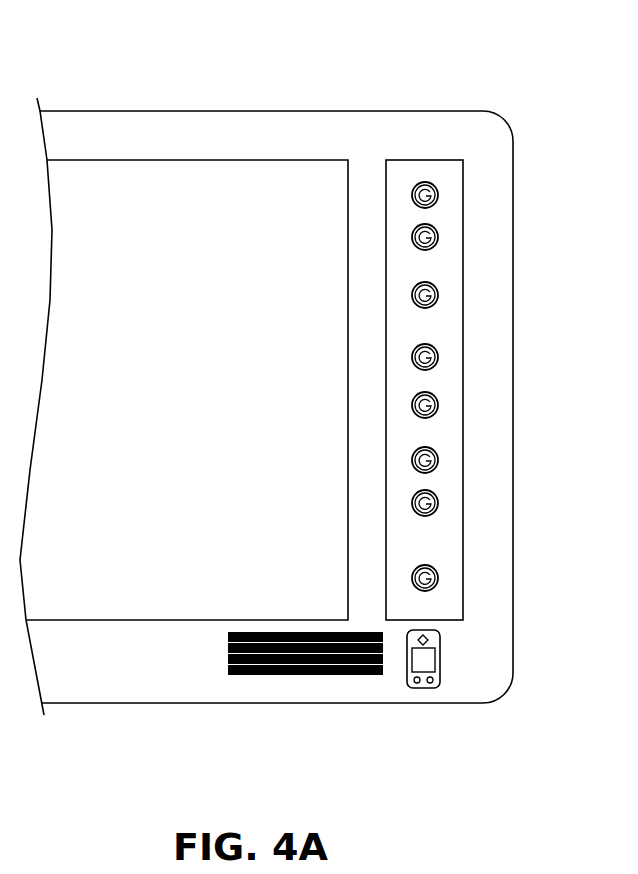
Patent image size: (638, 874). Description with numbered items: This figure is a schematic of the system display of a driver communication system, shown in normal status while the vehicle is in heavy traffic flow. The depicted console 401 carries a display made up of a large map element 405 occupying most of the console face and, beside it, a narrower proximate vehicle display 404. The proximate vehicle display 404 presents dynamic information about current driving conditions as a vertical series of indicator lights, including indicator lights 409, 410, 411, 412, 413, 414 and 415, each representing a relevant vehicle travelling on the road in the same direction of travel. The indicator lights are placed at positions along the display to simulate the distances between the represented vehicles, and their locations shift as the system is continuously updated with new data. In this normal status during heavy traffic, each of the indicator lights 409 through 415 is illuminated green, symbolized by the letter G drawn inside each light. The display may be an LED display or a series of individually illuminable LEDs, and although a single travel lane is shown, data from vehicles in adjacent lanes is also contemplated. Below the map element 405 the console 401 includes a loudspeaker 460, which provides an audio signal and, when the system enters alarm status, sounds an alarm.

The console 401 is at (249, 98).
The proximate vehicle display 404 is at (450, 168).
The map element 405 is at (137, 195).
The indicator light 409 is at (411, 194).
The indicator light 410 is at (411, 237).
The indicator light 411 is at (411, 296).
The indicator light 412 is at (411, 357).
The indicator light 413 is at (411, 405).
The indicator light 414 is at (411, 460).
The indicator light 415 is at (411, 577).
The loudspeaker 460 is at (352, 677).